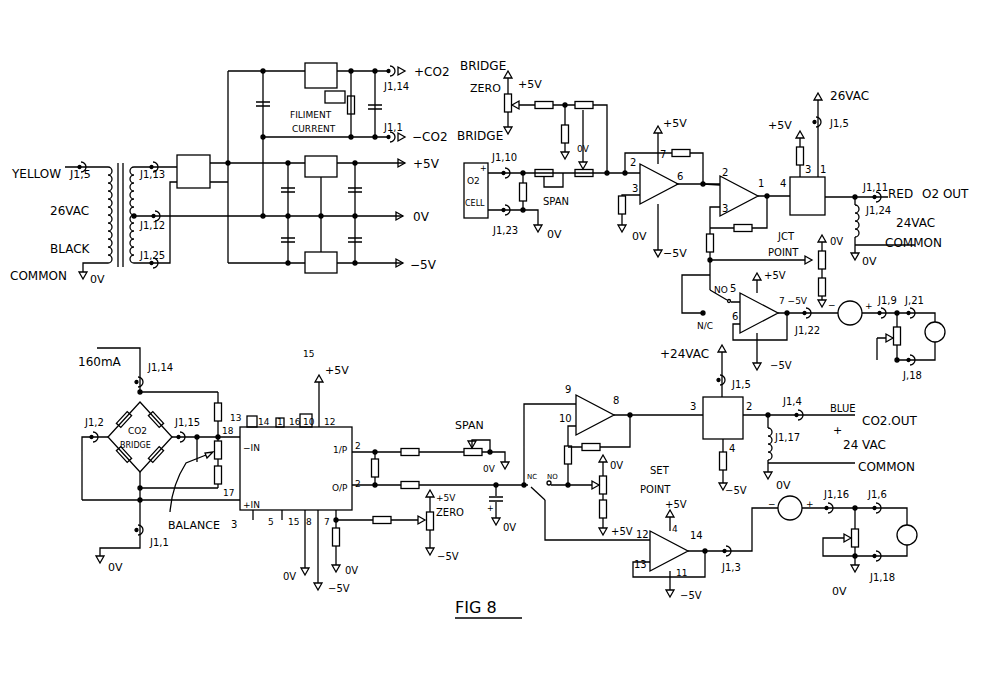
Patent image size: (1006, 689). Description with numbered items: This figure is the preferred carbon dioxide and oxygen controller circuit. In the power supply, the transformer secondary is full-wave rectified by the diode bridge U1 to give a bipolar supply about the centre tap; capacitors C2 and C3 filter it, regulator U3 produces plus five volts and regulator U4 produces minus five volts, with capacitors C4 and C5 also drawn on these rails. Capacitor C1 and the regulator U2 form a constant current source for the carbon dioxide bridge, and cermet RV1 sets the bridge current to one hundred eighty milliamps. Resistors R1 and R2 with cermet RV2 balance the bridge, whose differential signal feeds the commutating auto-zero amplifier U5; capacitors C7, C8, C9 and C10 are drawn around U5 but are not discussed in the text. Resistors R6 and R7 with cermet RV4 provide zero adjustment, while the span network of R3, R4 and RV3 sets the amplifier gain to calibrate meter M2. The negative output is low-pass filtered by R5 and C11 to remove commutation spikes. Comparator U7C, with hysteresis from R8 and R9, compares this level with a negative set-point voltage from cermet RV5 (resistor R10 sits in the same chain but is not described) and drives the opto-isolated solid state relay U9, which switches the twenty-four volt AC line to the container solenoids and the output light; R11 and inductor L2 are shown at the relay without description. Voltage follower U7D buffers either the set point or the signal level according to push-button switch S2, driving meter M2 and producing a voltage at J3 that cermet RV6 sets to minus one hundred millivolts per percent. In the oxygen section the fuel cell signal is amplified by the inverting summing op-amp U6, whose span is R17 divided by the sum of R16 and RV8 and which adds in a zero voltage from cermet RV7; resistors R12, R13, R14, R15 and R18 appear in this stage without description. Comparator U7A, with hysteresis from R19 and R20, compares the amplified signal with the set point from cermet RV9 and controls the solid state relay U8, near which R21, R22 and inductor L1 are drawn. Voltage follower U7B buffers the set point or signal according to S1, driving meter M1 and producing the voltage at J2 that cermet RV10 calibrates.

The diode bridge U1 is at (194, 173).
The constant current regulator U2 is at (321, 75).
The +5 volt regulator U3 is at (321, 166).
The -5 volt regulator U4 is at (321, 262).
The CAZ amplifier U5 is at (296, 468).
The uncompensated op-amp U6 is at (659, 184).
The O2 comparator U7A is at (739, 196).
The O2 voltage follower U7B is at (759, 313).
The CO2 comparator U7C is at (595, 415).
The CO2 voltage follower U7D is at (669, 551).
The O2 solid state relay U8 is at (807, 196).
The opto isolated solid state relay U9 is at (723, 418).
The capacitor C1 is at (271, 102).
The filter capacitor C2 is at (295, 189).
The filter capacitor C3 is at (295, 239).
The capacitor C4 is at (383, 105).
The capacitor C5 is at (362, 218).
The capacitor C7 is at (258, 425).
The capacitor C8 is at (282, 425).
The capacitor C9 is at (253, 520).
The capacitor C10 is at (282, 520).
The low pass filter capacitor C11 is at (508, 502).
The bridge balancing resistor R1 is at (209, 412).
The bridge balancing resistor R2 is at (209, 475).
The gain resistor R3 is at (367, 468).
The gain resistor R4 is at (409, 447).
The low pass filter resistor R5 is at (409, 480).
The zero adjustment resistor R6 is at (345, 540).
The zero adjustment resistor R7 is at (381, 536).
The hysteresis resistor R8 is at (558, 455).
The hysteresis resistor R9 is at (589, 456).
The resistor R10 is at (615, 509).
The resistor R11 is at (735, 463).
The resistor R12 is at (545, 114).
The resistor R13 is at (585, 114).
The resistor R14 is at (577, 134).
The resistor R15 is at (512, 192).
The input resistor R16 is at (585, 168).
The feedback resistor R17 is at (684, 147).
The resistor R18 is at (611, 205).
The hysteresis resistor R19 is at (721, 246).
The hysteresis resistor R20 is at (741, 235).
The resistor R21 is at (787, 156).
The resistor R22 is at (835, 287).
The bridge current cermet RV1 is at (340, 102).
The bridge balance cermet RV2 is at (205, 455).
The SPAN cermet RV3 is at (468, 463).
The zero cermet RV4 is at (442, 523).
The CO2 SET point cermet RV5 is at (615, 485).
The CO2 output level cermet RV6 is at (838, 535).
The O2 ZERO cermet RV7 is at (495, 104).
The O2 span cermet RV8 is at (540, 166).
The O2 SET point cermet RV9 is at (833, 260).
The O2 output level cermet RV10 is at (879, 335).
The inductor L1 is at (864, 222).
The inductor L2 is at (777, 445).
The O2 meter M1 is at (850, 313).
The CO2 meter M2 is at (790, 508).
The O2 output level jack J2 is at (942, 332).
The CO2 output level jack J3 is at (916, 535).
The O2 selector switch S1 is at (706, 294).
The push button switch S2 is at (548, 493).